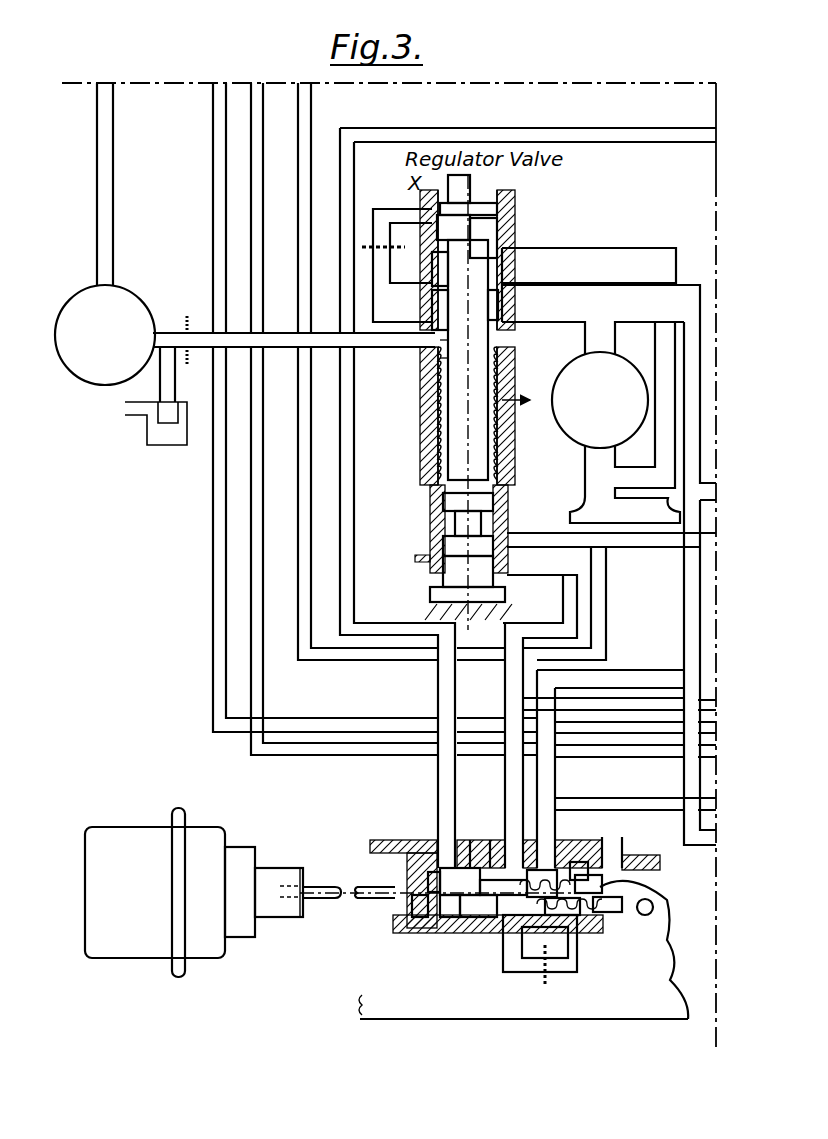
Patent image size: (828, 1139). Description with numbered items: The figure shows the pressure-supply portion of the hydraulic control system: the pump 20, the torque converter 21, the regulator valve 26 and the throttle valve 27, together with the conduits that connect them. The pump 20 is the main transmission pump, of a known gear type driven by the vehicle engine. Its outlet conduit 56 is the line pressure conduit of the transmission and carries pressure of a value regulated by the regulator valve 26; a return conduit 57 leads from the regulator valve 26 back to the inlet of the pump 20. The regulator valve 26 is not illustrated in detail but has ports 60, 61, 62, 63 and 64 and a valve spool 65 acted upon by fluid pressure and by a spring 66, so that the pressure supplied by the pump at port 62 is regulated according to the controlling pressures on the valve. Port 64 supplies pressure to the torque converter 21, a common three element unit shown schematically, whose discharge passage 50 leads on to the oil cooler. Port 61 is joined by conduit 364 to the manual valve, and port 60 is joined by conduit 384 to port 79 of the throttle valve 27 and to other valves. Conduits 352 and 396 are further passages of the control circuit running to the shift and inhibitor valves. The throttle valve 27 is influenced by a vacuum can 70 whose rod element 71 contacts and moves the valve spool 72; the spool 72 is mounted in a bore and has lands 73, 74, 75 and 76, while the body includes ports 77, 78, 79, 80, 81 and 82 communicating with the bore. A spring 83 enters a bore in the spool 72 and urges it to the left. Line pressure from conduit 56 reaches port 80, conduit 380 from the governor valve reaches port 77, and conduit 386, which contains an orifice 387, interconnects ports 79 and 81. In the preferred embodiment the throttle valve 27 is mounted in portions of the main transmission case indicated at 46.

The pump 20 is at (593, 422).
The torque converter 21 is at (111, 332).
The regulator valve 26 is at (474, 406).
The throttle valve 27 is at (393, 917).
The main transmission case portions 46 is at (652, 925).
The discharge passage 50 is at (97, 136).
The outlet conduit 56 is at (694, 288).
The return conduit 57 is at (637, 248).
The port 60 is at (505, 595).
The port 61 is at (507, 540).
The port 62 is at (500, 312).
The port 63 is at (500, 256).
The port 64 is at (440, 343).
The valve spool 65 is at (436, 363).
The spring 66 is at (436, 457).
The vacuum can 70 is at (130, 827).
The rod element 71 is at (326, 900).
The valve spool 72 is at (495, 922).
The land 73 is at (412, 873).
The land 74 is at (455, 870).
The land 75 is at (560, 870).
The land 76 is at (610, 866).
The port 77 is at (416, 931).
The port 78 is at (474, 923).
The port 79 is at (505, 858).
The port 80 is at (530, 958).
The port 81 is at (590, 920).
The port 82 is at (625, 918).
The spring 83 is at (640, 887).
The conduit 352 is at (252, 195).
The conduit 364 is at (312, 110).
The conduit 380 is at (670, 130).
The conduit 384 is at (516, 590).
The conduit 386 is at (565, 966).
The orifice 387 is at (537, 968).
The conduit 396 is at (213, 139).